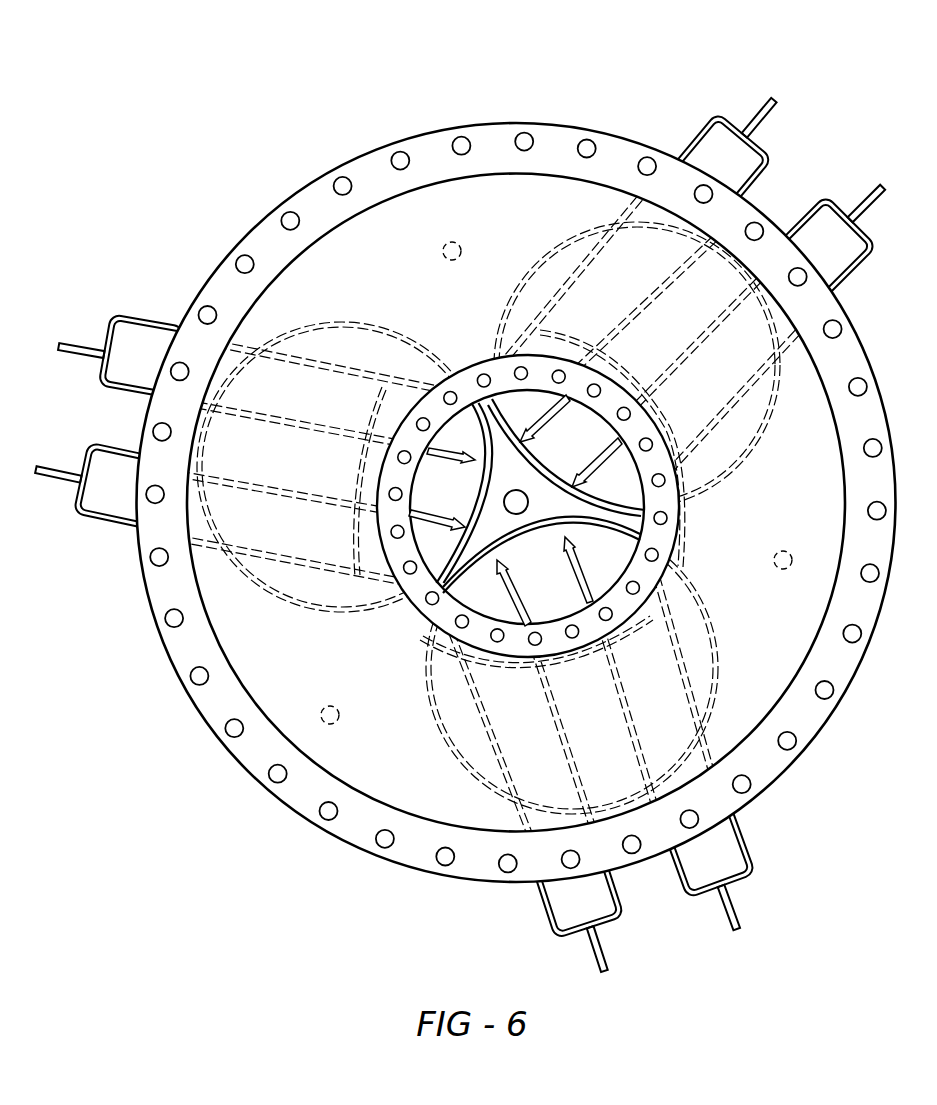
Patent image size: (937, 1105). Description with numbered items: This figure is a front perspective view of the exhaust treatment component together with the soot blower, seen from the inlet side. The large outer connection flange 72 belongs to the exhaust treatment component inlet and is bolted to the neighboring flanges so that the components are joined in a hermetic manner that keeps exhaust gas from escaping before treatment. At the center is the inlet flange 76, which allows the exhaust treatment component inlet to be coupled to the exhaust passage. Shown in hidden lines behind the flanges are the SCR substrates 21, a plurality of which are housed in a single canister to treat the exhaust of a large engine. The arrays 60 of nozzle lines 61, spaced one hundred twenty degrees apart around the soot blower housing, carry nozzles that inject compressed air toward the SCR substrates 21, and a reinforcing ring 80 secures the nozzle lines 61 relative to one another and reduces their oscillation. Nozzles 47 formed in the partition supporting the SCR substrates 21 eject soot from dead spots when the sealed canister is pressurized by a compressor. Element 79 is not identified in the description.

The connection flange 72 is at (497, 126).
The arrays of nozzle lines 60 is at (830, 132).
The nozzles 47 is at (185, 768).
The nozzle lines 61 is at (560, 285).
The SCR substrates 21 is at (735, 440).
The inlet flange 76 is at (478, 630).
The bolt hole 79 is at (321, 820).
The reinforcing ring 80 is at (395, 630).